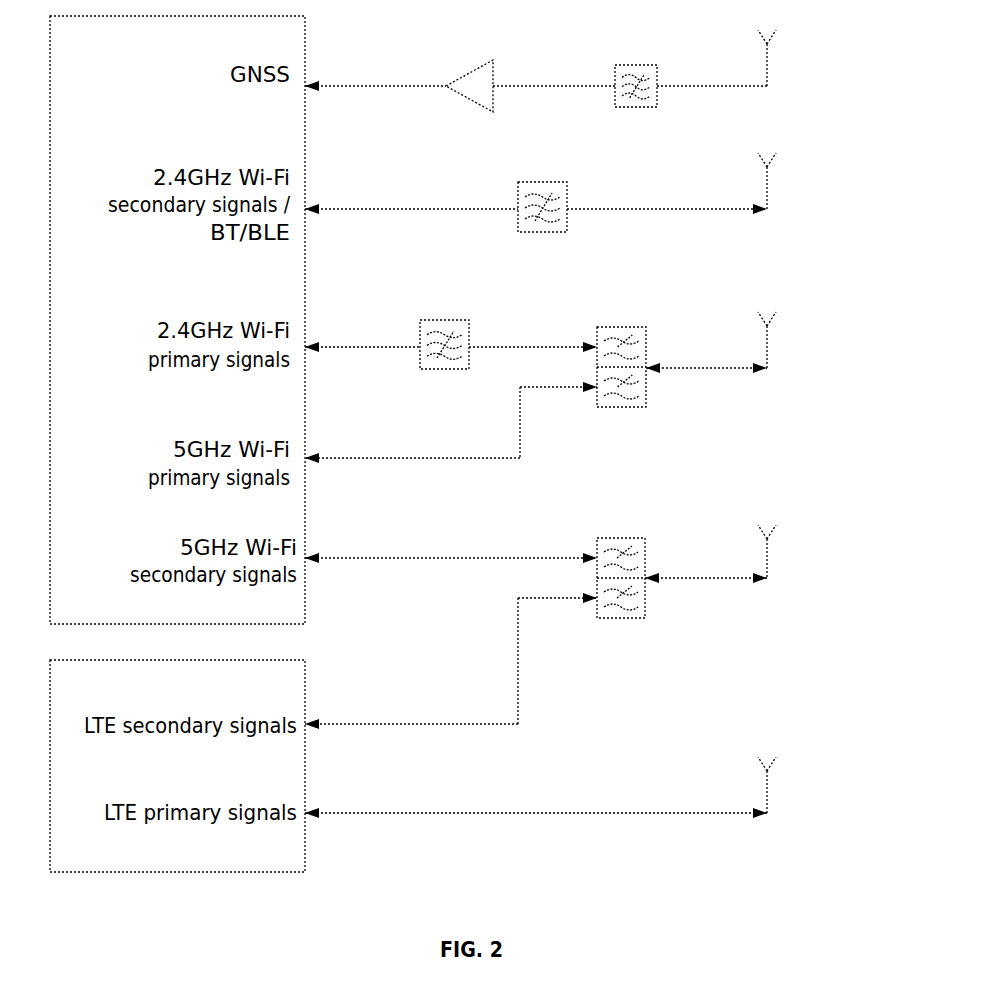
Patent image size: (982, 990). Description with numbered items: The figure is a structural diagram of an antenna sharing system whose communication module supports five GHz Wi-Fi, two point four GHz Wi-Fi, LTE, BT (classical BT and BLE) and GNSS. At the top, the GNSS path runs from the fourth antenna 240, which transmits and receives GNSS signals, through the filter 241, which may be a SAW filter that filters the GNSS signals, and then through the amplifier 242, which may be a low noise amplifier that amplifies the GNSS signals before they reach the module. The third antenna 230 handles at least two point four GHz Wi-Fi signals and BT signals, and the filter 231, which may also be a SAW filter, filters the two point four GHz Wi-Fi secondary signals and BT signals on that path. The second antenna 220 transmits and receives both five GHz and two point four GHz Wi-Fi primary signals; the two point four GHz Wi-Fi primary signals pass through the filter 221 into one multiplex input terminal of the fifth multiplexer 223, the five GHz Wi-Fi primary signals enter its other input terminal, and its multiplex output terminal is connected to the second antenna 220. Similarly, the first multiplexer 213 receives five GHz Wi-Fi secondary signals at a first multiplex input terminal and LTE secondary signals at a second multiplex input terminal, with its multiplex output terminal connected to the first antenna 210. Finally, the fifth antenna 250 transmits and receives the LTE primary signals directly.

The fourth antenna 240 is at (768, 65).
The filter 241 is at (635, 63).
The amplifier 242 is at (467, 72).
The third antenna 230 is at (773, 190).
The filter 231 is at (550, 182).
The second antenna 220 is at (772, 345).
The filter 221 is at (447, 320).
The fifth multiplexer 223 is at (625, 327).
The first antenna 210 is at (773, 555).
The first multiplexer 213 is at (625, 538).
The fifth antenna 250 is at (773, 797).